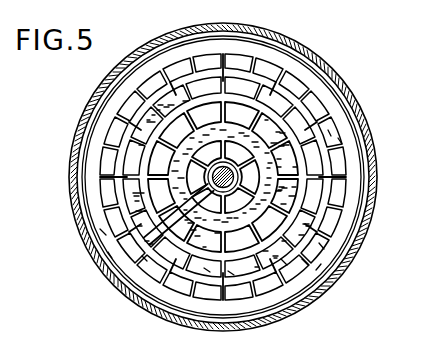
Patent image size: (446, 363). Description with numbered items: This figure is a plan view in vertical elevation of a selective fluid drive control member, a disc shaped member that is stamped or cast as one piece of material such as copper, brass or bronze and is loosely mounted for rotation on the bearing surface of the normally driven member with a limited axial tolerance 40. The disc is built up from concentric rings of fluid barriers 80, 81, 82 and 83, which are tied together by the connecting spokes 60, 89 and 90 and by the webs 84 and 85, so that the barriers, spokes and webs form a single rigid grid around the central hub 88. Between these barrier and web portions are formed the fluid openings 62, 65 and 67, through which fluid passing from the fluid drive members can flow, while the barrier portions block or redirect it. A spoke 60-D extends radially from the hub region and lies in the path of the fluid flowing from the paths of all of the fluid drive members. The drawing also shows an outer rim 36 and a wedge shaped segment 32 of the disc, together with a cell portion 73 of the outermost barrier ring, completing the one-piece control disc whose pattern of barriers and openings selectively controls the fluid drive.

The wedge segment 32 is at (145, 258).
The outer shell 36 is at (313, 70).
The limited axial tolerance 40 is at (347, 282).
The connecting spoke 60 is at (251, 177).
The spoke 60-D is at (132, 295).
The fluid opening 62 is at (318, 278).
The fluid opening 65 is at (284, 262).
The fluid opening 67 is at (300, 145).
The outer cell ring 73 is at (318, 108).
The fluid barrier 80 is at (172, 104).
The fluid barrier 81 is at (305, 262).
The fluid barrier 82 is at (340, 141).
The fluid barrier 83 is at (110, 255).
The web 84 is at (330, 133).
The web 85 is at (207, 270).
The hub 88 is at (228, 163).
The connecting spoke 89 is at (322, 246).
The connecting spoke 90 is at (103, 232).